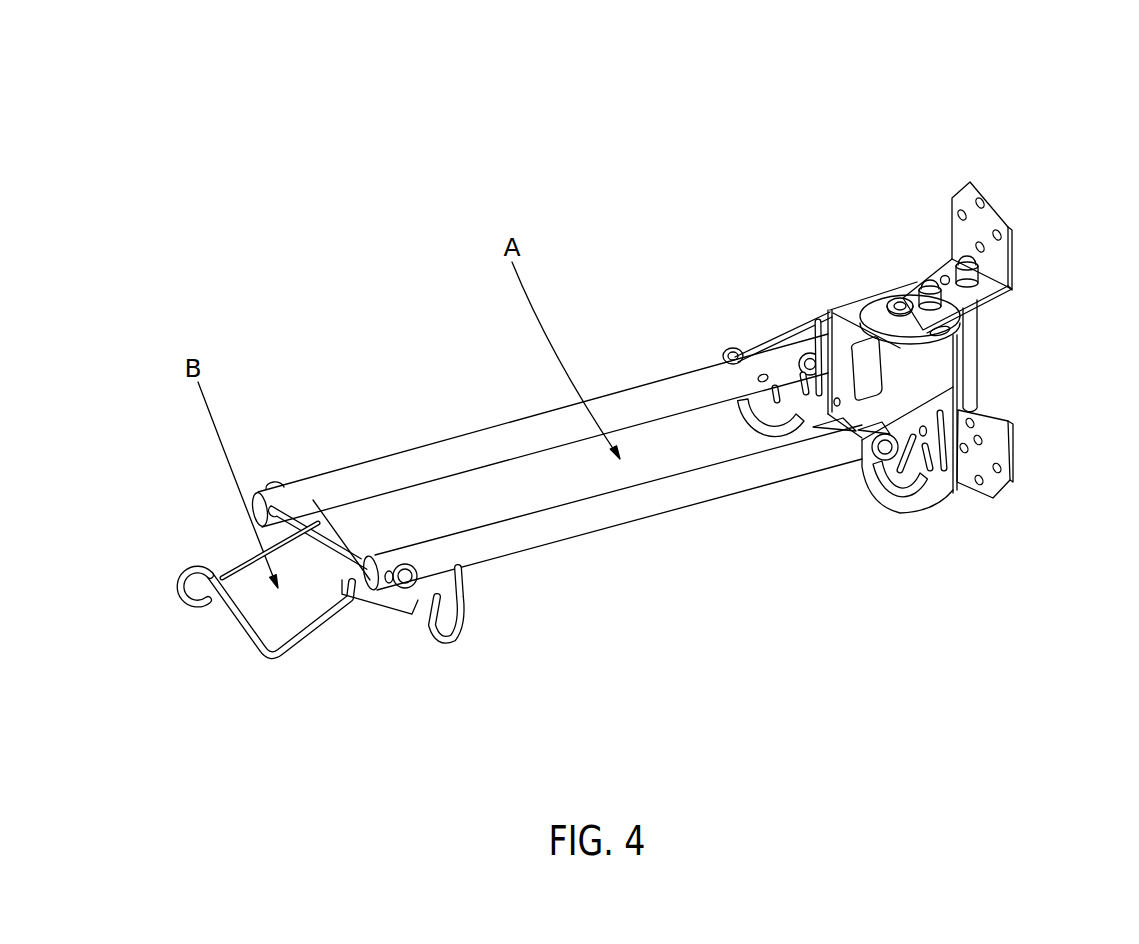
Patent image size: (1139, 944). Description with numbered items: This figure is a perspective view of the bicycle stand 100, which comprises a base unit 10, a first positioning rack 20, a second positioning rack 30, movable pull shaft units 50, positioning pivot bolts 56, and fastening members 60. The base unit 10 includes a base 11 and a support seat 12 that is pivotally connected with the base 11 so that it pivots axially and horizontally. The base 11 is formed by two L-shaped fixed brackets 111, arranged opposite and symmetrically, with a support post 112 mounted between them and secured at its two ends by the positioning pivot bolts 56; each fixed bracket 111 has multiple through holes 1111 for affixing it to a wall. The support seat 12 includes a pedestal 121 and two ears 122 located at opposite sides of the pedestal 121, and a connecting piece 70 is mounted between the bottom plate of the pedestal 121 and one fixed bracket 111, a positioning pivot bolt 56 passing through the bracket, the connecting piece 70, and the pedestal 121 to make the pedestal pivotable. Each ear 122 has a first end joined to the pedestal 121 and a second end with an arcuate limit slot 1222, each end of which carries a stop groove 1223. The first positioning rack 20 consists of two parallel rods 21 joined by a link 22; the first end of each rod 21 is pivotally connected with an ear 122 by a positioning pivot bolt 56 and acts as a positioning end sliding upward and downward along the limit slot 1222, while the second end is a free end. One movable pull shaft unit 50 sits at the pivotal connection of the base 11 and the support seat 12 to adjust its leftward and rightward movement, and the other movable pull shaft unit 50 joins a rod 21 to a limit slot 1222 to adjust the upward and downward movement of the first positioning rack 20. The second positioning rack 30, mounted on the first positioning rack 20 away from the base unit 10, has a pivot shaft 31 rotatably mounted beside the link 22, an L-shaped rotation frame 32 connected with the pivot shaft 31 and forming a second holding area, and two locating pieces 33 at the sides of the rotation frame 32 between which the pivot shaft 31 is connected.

The bicycle stand 100 is at (575, 188).
The base unit 10 is at (662, 188).
The base 11 is at (956, 174).
The fixed bracket 111 is at (1011, 256).
The through hole 1111 is at (982, 202).
The support post 112 is at (969, 368).
The support seat 12 is at (937, 528).
The pedestal 121 is at (828, 306).
The ear 122 is at (770, 337).
The limit slot 1222 is at (889, 491).
The stop groove 1223 is at (930, 490).
The movable pull shaft unit 50 is at (898, 303).
The positioning pivot bolt 56 is at (914, 296).
The connecting piece 70 is at (980, 333).
The first positioning rack 20 is at (394, 436).
The rod 21 is at (484, 455).
The link 22 is at (317, 523).
The second positioning rack 30 is at (313, 686).
The pivot shaft 31 is at (350, 535).
The rotation frame 32 is at (250, 632).
The locating piece 33 is at (374, 603).
The fastening member 60 is at (461, 636).